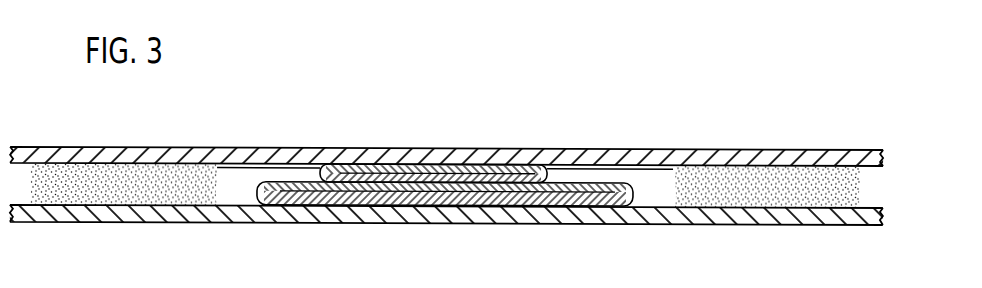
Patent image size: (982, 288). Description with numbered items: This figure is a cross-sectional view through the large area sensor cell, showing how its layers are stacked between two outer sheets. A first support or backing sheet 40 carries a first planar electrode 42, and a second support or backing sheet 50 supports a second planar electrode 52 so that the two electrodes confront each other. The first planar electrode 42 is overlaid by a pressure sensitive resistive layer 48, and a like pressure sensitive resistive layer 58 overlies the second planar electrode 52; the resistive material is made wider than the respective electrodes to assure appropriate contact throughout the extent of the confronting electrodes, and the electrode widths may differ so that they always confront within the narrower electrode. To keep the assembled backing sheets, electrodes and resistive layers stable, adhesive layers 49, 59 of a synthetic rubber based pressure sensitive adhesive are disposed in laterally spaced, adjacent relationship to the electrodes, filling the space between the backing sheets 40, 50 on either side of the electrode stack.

The first support or backing sheet 40 is at (607, 148).
The first planar electrode 42 is at (456, 176).
The pressure sensitive resistive layer 48 is at (322, 166).
The adhesive layer 49 is at (205, 178).
The second support or backing sheet 50 is at (255, 224).
The second planar electrode 52 is at (363, 188).
The pressure sensitive resistive layer 58 is at (481, 188).
The adhesive layer 59 is at (143, 190).